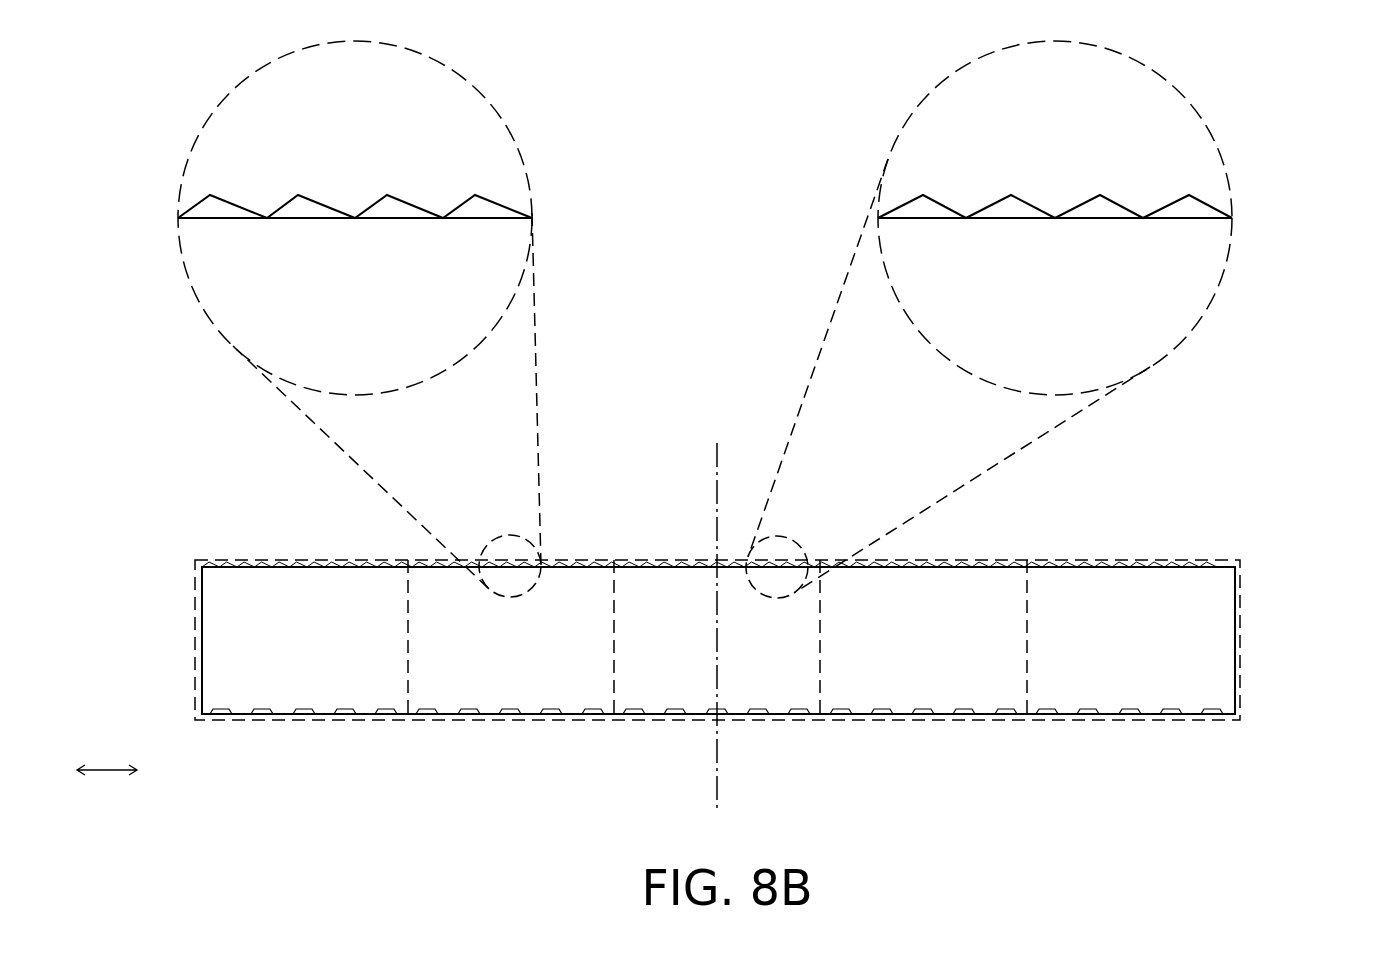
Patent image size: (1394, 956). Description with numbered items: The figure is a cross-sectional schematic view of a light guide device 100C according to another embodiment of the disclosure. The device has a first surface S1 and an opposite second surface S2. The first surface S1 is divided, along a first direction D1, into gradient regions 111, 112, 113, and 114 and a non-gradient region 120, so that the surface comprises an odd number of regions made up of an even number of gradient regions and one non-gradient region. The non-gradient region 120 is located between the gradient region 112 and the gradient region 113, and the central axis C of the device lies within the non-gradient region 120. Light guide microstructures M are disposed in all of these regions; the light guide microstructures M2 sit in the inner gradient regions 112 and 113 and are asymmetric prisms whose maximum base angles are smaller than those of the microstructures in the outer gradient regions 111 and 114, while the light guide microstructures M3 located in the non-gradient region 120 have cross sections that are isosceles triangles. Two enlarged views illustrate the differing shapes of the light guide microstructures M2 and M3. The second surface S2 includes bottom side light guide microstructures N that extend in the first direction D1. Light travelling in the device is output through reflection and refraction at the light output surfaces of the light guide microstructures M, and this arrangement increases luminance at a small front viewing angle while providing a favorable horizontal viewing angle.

The light guide device 100C is at (1330, 823).
The gradient region 111 is at (288, 720).
The gradient region 112 is at (507, 720).
The gradient region 113 is at (887, 720).
The gradient region 114 is at (1182, 720).
The non-gradient region 120 is at (665, 720).
The light guide microstructures M is at (1215, 560).
The light guide microstructures M2 is at (328, 206).
The light guide microstructures M3 is at (1036, 206).
The first surface S1 is at (1138, 566).
The second surface S2 is at (1111, 717).
The bottom side light guide microstructures N is at (1008, 718).
The central axis C is at (717, 606).
The first direction D1 is at (107, 795).